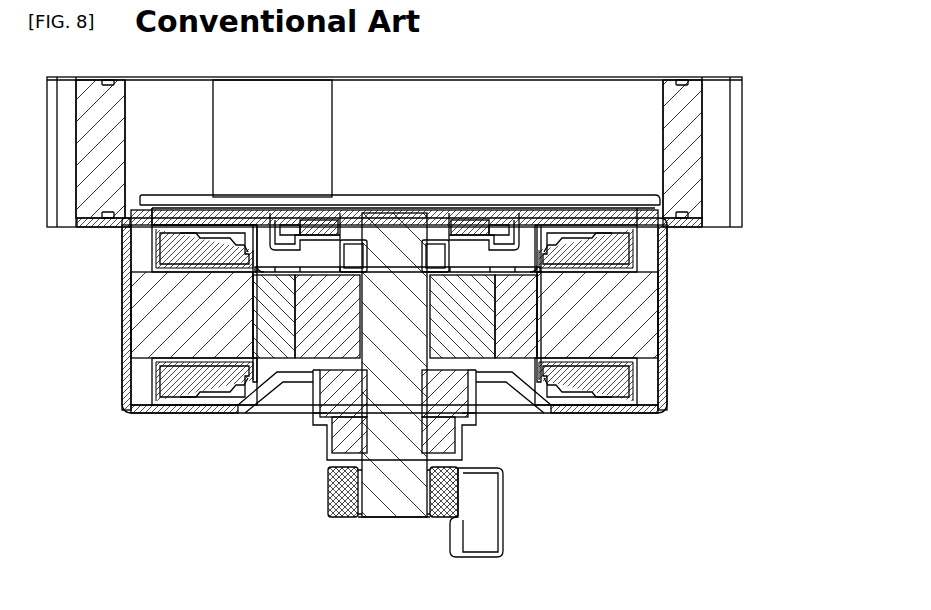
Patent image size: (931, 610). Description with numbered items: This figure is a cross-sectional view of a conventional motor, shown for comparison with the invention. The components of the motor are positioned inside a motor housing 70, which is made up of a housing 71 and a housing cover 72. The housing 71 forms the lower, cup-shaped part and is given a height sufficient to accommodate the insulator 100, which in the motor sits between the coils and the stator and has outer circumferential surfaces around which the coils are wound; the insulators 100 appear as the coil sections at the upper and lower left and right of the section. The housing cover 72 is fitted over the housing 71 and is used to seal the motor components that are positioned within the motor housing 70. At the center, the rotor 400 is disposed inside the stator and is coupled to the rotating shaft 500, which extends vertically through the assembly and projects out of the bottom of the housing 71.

The motor housing 70 is at (792, 143).
The housing 71 is at (668, 305).
The housing cover 72 is at (716, 152).
The insulator 100 is at (143, 247).
The rotor 400 is at (318, 322).
The rotating shaft 500 is at (393, 493).